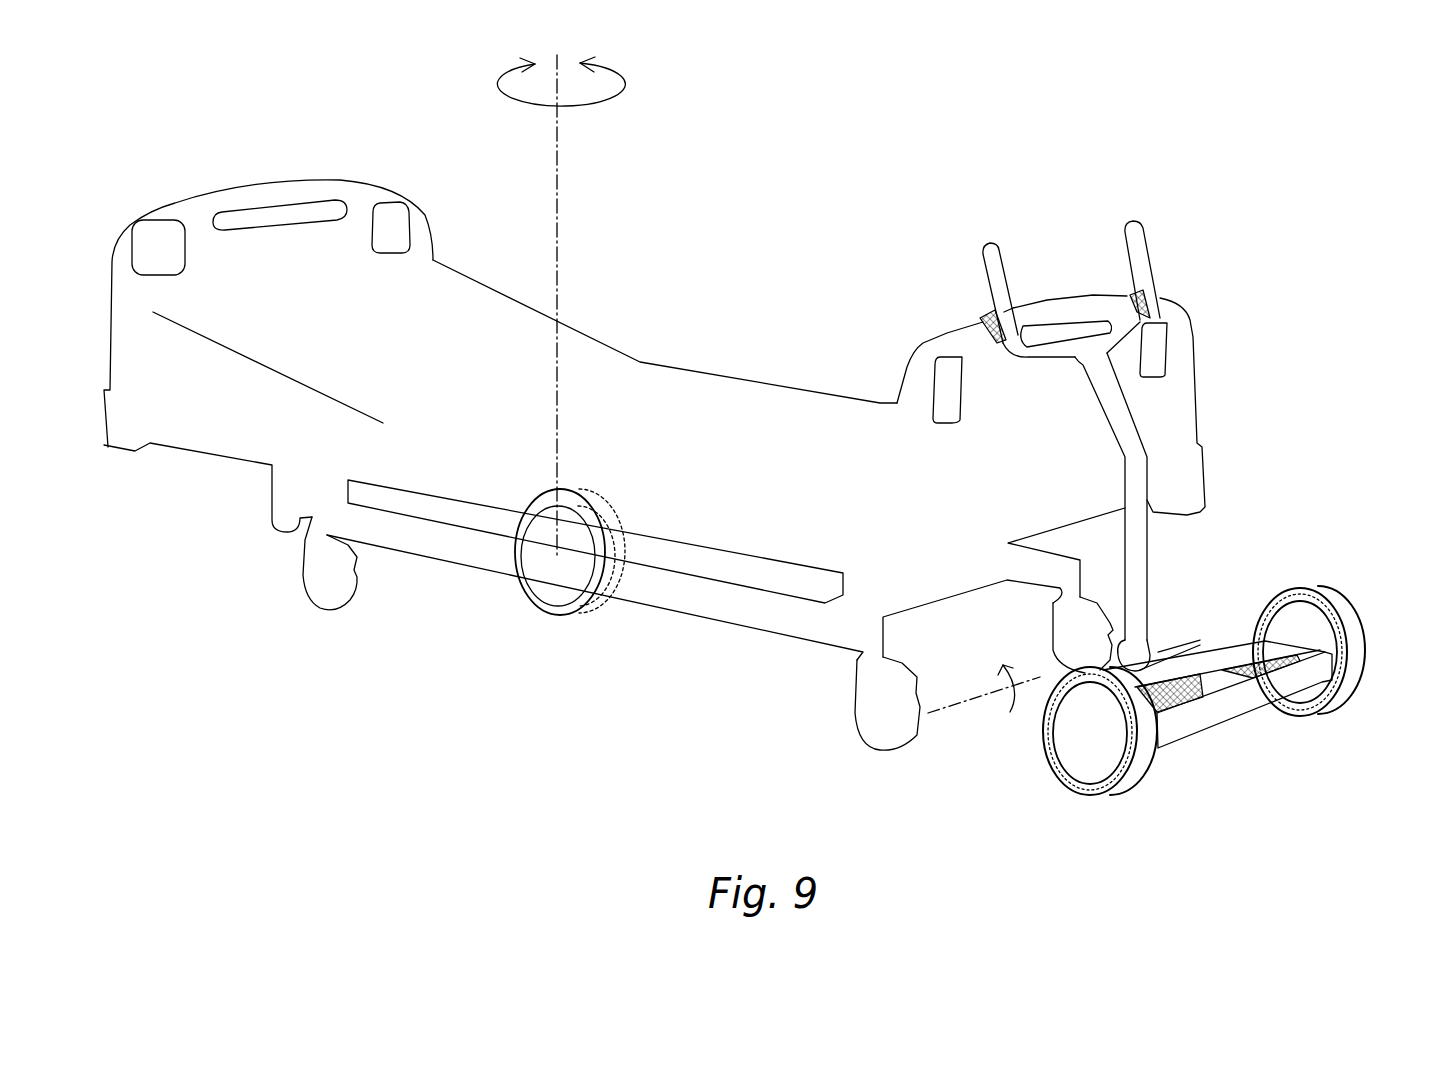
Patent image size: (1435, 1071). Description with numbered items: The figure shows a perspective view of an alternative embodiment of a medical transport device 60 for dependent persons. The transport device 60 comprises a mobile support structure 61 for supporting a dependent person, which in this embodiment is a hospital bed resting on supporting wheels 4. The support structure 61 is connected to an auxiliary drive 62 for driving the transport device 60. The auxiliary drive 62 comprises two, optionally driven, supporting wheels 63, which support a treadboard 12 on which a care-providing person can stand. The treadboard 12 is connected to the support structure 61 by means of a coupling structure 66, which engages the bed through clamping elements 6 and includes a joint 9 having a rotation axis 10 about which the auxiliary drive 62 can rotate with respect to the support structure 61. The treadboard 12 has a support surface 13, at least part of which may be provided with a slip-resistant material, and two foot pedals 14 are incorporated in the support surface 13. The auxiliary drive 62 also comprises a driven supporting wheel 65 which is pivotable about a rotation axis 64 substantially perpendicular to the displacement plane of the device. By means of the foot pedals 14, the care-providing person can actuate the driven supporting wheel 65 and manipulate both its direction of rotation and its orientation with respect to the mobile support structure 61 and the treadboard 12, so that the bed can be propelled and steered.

The supporting wheels 4 is at (327, 585).
The clamping elements 6 is at (987, 317).
The joint 9 is at (1160, 645).
The rotation axis 10 is at (957, 710).
The treadboard 12 is at (1228, 702).
The support surface 13 is at (1215, 677).
The foot pedals 14 is at (1173, 702).
The medical transport device 60 is at (1318, 270).
The mobile support structure 61 is at (220, 161).
The auxiliary drive 62 is at (550, 623).
The supporting wheels 63 is at (1298, 622).
The rotation axis 64 is at (558, 217).
The driven supporting wheel 65 is at (540, 530).
The coupling structure 66 is at (1123, 410).